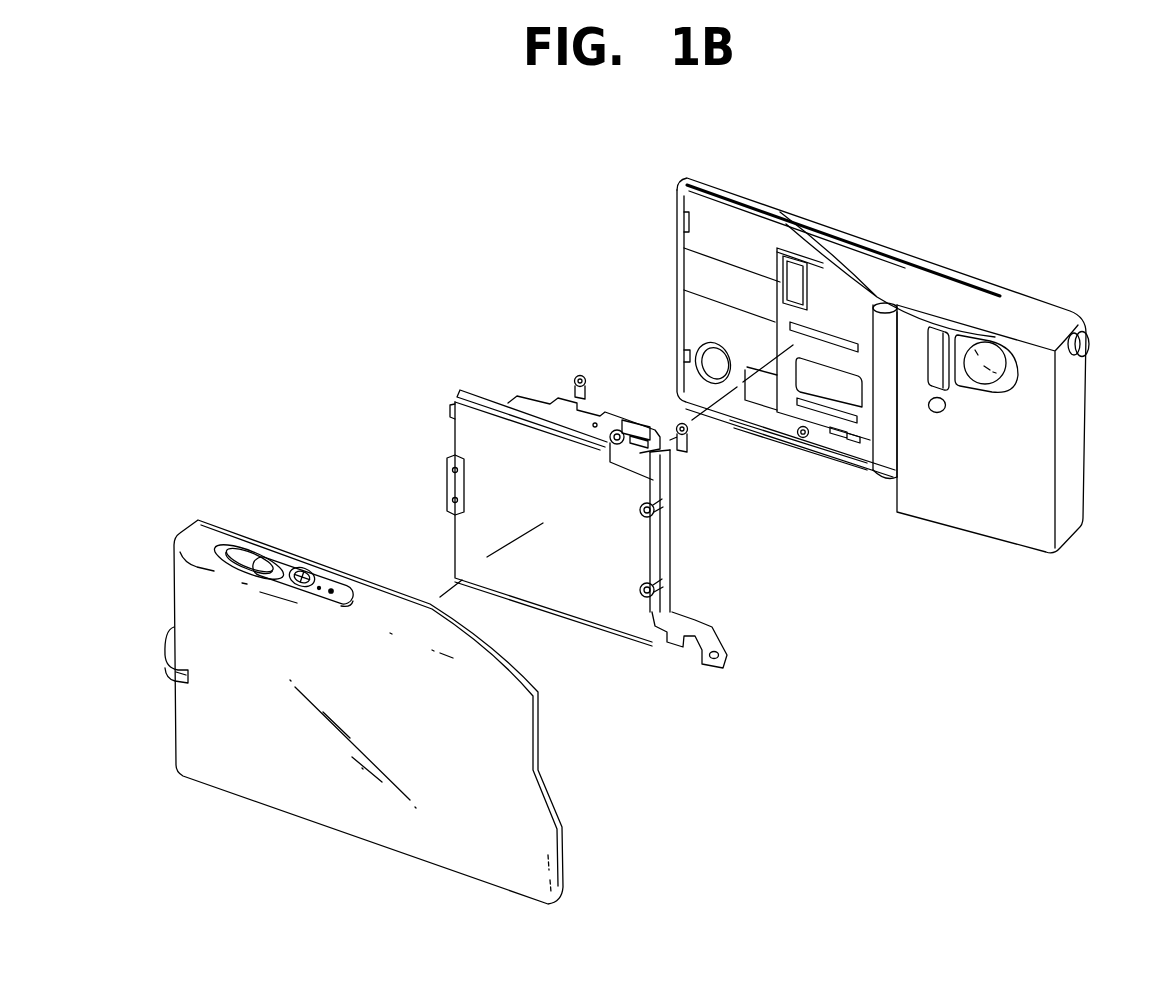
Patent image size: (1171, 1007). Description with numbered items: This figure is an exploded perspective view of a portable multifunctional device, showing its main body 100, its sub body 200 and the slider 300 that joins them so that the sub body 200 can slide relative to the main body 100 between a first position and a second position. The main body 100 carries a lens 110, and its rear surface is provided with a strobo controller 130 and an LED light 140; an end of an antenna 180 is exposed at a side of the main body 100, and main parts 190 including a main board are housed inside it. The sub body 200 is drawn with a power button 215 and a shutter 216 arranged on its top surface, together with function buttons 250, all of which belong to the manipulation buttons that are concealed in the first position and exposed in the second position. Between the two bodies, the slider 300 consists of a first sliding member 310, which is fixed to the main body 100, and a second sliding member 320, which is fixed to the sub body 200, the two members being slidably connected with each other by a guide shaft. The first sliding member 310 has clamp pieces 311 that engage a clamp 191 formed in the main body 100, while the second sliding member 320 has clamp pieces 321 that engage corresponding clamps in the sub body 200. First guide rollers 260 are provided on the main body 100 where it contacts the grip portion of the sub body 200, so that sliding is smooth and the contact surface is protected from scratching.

The main body 100 is at (874, 387).
The lens 110 is at (985, 378).
The strobo controller 130 is at (928, 366).
The LED light 140 is at (936, 412).
The antenna 180 is at (1089, 345).
The main parts 190 is at (817, 317).
The clamp 191 is at (802, 439).
The sub body 200 is at (364, 695).
The power button 215 is at (303, 569).
The shutter 216 is at (252, 553).
The function buttons 250 is at (333, 589).
The first guide rollers 260 is at (683, 354).
The slider 300 is at (563, 509).
The first sliding member 310 is at (529, 392).
The clamp pieces 311 is at (679, 423).
The second sliding member 320 is at (605, 616).
The clamp pieces 321 is at (658, 594).